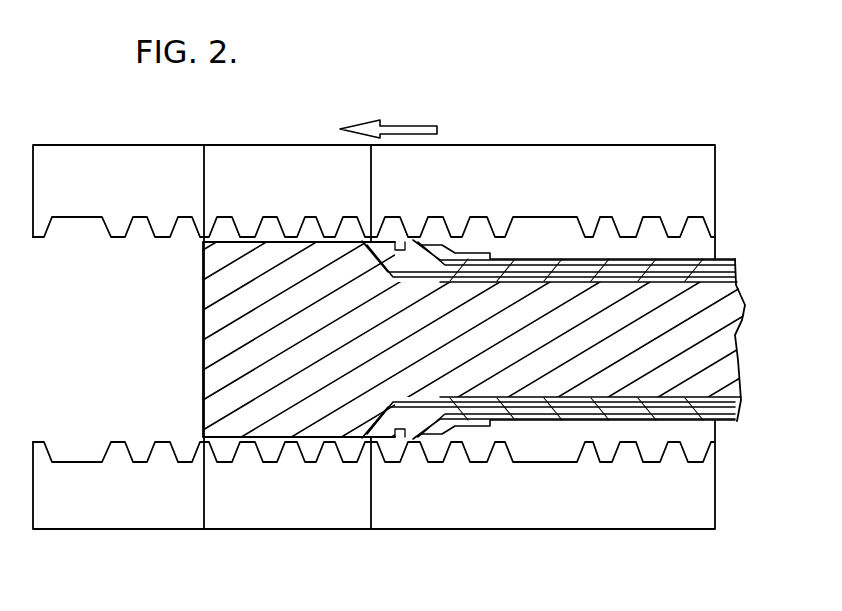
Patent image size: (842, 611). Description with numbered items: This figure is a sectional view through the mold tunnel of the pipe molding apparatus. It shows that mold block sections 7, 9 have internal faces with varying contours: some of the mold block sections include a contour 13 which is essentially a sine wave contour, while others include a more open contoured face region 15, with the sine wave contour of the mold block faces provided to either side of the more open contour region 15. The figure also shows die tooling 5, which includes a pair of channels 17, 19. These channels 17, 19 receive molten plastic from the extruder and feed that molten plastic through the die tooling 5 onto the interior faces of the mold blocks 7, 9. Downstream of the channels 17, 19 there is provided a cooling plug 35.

The die tooling 5 is at (745, 313).
The mold block section 7 is at (568, 150).
The mold block section 9 is at (570, 515).
The sine wave contour 13 is at (306, 215).
The open contoured face region 15 is at (565, 227).
The channel 17 is at (433, 237).
The channel 19 is at (380, 240).
The cooling plug 35 is at (196, 303).